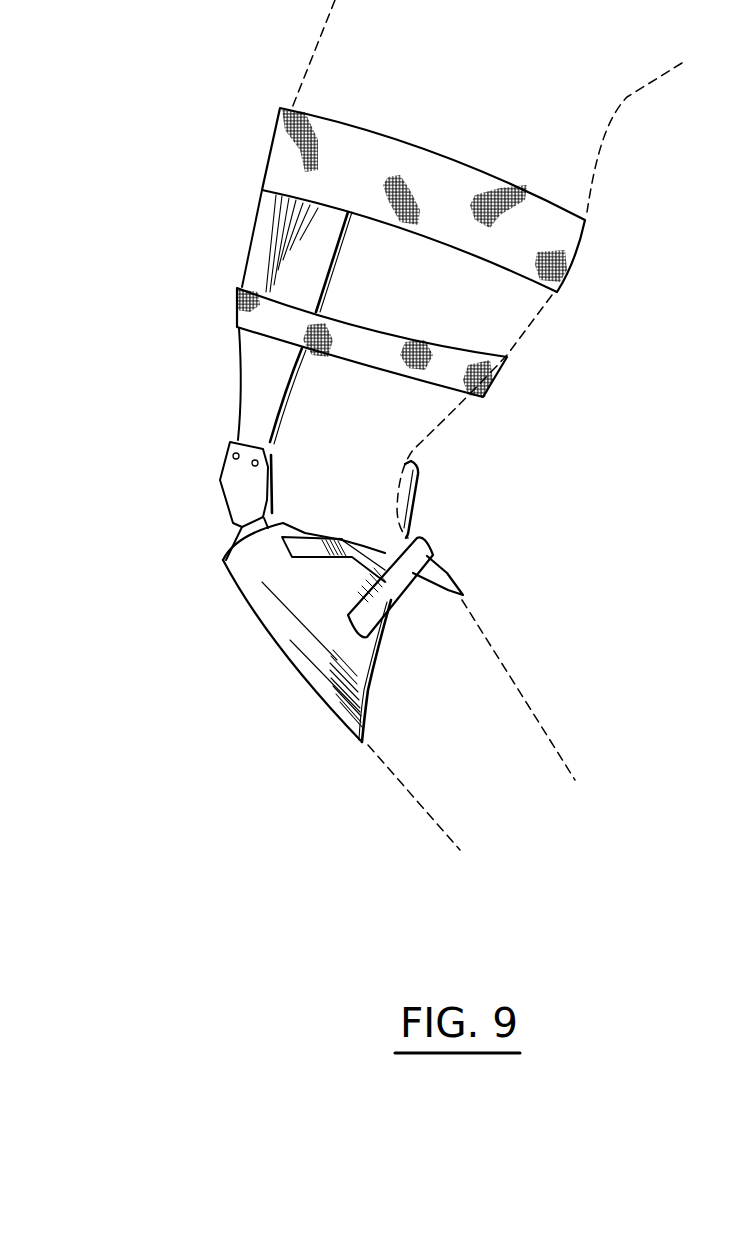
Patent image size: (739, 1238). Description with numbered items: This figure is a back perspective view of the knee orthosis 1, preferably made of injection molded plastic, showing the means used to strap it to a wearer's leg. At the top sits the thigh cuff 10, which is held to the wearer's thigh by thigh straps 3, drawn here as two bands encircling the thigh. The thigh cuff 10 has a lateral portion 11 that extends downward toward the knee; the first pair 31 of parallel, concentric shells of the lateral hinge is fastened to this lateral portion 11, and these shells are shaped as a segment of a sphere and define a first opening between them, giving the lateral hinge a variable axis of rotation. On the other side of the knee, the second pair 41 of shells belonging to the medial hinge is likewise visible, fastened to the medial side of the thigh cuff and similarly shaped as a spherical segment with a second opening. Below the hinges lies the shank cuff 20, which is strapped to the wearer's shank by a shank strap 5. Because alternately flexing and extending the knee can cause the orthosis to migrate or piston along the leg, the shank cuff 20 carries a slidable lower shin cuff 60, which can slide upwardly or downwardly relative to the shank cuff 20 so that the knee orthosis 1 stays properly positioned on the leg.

The knee orthosis 1 is at (352, 433).
The thigh cuff 10 is at (392, 276).
The lateral portion of thigh cuff 11 is at (250, 347).
The thigh straps 3 is at (507, 357).
The first pair of shells 31 is at (230, 475).
The second pair of shells 41 is at (423, 492).
The shank cuff 20 is at (334, 638).
The lower shin cuff 60 is at (270, 622).
The shank straps 5 is at (430, 547).